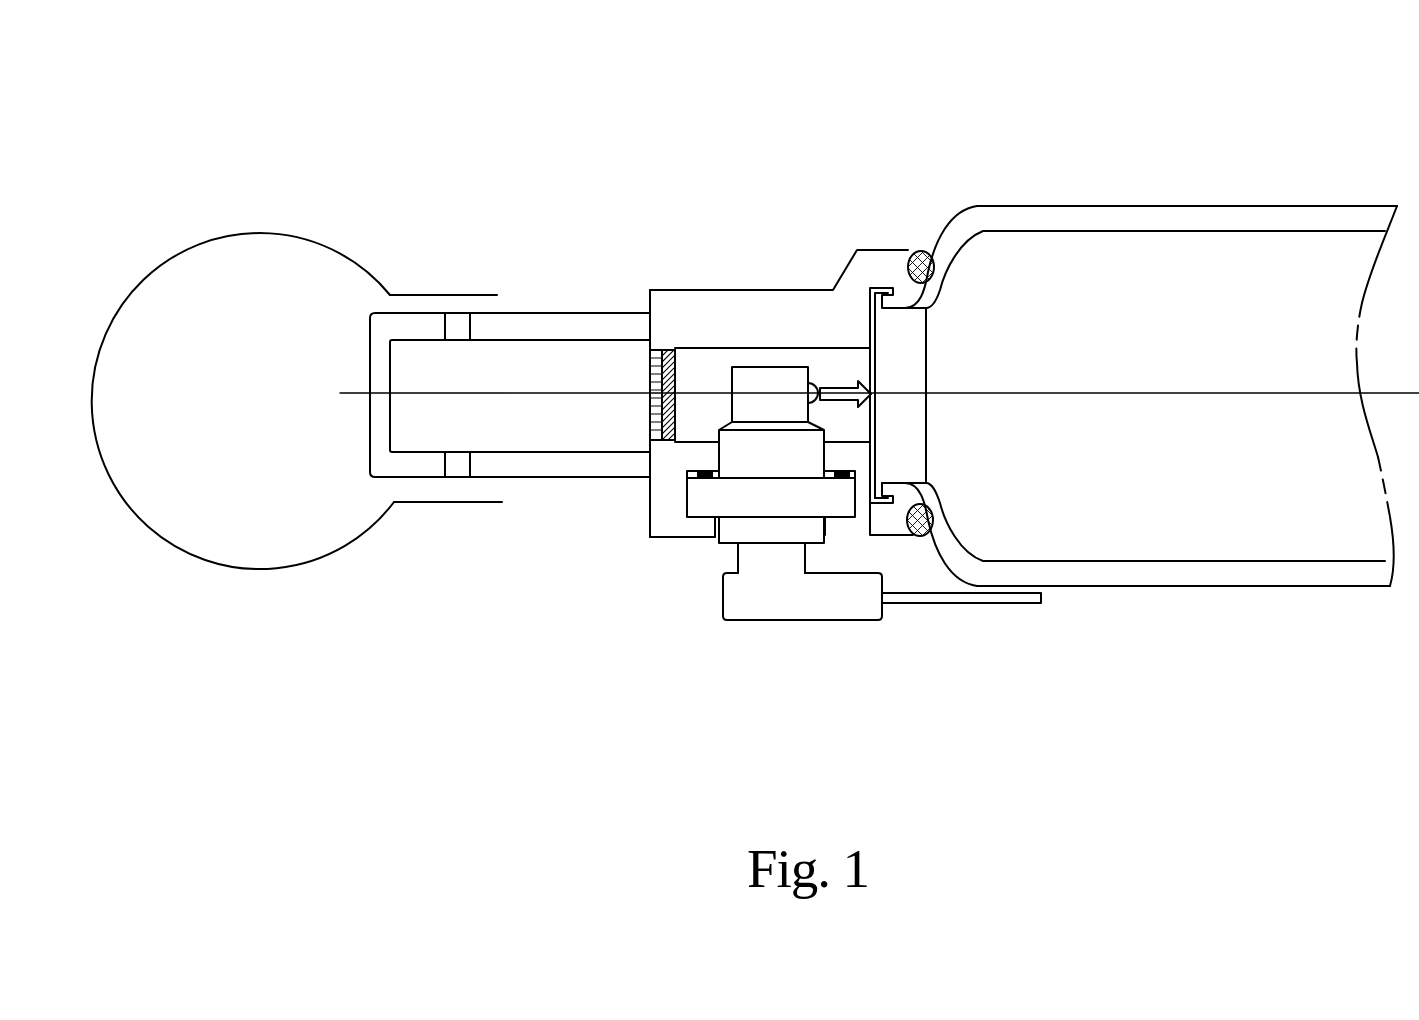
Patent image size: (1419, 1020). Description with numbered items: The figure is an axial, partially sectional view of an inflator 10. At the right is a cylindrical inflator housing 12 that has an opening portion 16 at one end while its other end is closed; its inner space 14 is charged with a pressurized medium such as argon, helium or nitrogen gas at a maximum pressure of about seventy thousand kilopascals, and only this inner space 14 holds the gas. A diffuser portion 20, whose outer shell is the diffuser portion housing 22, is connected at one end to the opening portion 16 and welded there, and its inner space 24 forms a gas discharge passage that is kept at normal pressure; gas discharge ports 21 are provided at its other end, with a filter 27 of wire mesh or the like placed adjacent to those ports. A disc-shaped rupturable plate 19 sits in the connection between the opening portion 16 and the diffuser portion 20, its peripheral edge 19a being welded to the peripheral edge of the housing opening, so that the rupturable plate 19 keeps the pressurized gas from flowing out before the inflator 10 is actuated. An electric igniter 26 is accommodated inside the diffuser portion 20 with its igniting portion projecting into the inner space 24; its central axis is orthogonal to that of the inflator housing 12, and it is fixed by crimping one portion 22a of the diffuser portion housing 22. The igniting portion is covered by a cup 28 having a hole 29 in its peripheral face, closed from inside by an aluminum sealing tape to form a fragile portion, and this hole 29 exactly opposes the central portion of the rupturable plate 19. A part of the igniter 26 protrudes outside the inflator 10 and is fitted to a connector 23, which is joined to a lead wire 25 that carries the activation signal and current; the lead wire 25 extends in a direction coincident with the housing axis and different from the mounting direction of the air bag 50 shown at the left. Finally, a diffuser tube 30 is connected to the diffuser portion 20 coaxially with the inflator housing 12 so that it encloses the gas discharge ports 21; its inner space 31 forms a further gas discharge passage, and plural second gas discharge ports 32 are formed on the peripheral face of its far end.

The inflator 10 is at (801, 454).
The inflator housing 12 is at (1149, 315).
The inner space 14 is at (1209, 327).
The opening portion 16 is at (901, 309).
The rupturable plate 19 is at (882, 430).
The peripheral edge 19a is at (888, 294).
The diffuser portion 20 is at (755, 282).
The gas discharge ports 21 is at (652, 421).
The diffuser portion housing 22 is at (781, 324).
The crimped portion of diffuser portion housing 22a is at (667, 522).
The connector 23 is at (860, 620).
The inner space 24 is at (732, 390).
The lead wire 25 is at (944, 604).
The igniter 26 is at (809, 406).
The filter 27 is at (682, 345).
The cup 28 is at (773, 380).
The hole 29 is at (812, 384).
The diffuser tube 30 is at (510, 402).
The inner space 31 is at (527, 390).
The second gas discharge ports 32 is at (457, 467).
The air bag 50 is at (240, 232).